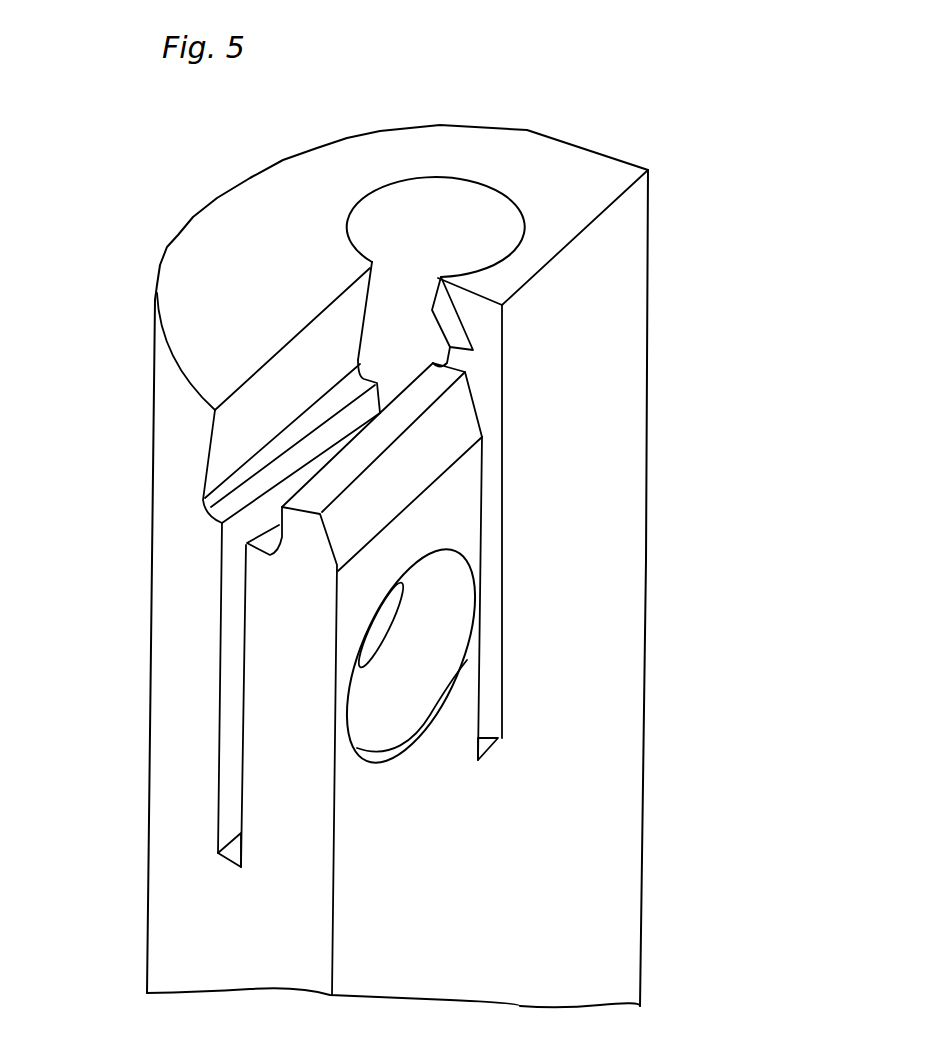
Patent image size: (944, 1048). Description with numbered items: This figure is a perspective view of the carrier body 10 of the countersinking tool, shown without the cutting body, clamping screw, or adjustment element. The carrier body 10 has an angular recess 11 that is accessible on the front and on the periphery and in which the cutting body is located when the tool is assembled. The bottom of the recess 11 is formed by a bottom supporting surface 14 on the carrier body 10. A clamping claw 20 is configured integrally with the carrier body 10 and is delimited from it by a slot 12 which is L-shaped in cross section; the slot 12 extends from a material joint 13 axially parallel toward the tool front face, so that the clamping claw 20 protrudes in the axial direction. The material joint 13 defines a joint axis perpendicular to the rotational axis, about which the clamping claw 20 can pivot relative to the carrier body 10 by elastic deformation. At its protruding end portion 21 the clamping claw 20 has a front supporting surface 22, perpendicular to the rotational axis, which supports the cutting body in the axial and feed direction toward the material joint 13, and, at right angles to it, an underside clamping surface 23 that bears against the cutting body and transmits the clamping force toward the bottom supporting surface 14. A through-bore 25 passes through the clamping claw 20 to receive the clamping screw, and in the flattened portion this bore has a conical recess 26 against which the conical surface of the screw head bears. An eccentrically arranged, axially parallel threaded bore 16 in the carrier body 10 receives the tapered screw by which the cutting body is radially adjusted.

The carrier body 10 is at (612, 950).
The angular recess 11 is at (228, 435).
The slot 12 is at (225, 788).
The material joint 13 is at (232, 880).
The bottom supporting surface 14 is at (225, 463).
The threaded bore 16 is at (478, 172).
The clamping claw 20 is at (272, 648).
The protruding end portion 21 is at (266, 601).
The front supporting surface 22 is at (315, 496).
The underside clamping surface 23 is at (246, 544).
The through-bore 25 is at (420, 748).
The conical recess 26 is at (423, 695).